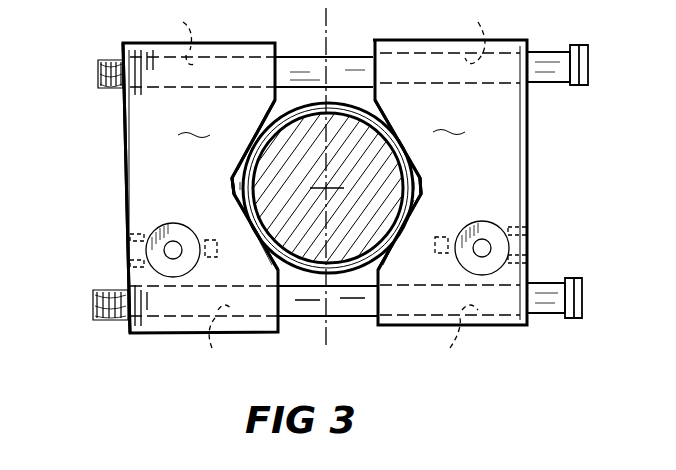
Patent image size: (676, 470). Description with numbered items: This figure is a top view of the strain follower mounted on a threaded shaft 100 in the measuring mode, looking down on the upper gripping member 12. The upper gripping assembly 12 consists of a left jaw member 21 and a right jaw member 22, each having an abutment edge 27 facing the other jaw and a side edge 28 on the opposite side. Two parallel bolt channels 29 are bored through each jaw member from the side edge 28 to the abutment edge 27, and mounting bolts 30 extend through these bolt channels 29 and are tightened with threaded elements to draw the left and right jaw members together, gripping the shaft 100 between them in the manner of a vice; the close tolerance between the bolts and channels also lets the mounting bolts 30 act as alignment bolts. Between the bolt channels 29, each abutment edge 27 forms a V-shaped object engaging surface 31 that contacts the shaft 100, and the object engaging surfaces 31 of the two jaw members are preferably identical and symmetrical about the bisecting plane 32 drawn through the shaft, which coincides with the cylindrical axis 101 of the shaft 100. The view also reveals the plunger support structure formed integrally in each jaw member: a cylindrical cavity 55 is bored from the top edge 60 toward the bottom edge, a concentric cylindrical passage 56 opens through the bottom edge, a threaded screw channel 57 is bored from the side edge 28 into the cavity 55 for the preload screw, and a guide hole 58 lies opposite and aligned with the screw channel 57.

The upper gripping member 12 is at (298, 42).
The left jaw member 21 is at (127, 115).
The right jaw member 22 is at (520, 125).
The abutment edge 27 is at (290, 282).
The side edge 28 is at (125, 183).
The bolt channels 29 is at (321, 189).
The mounting bolts 30 is at (540, 52).
The object engaging surface 31 is at (232, 184).
The plane 32 is at (334, 28).
The cylindrical cavity 55 is at (180, 226).
The cylindrical passage 56 is at (176, 255).
The threaded screw channel 57 is at (126, 251).
The guide hole 58 is at (218, 258).
The top edge 60 is at (321, 123).
The threaded shaft 100 is at (340, 272).
The cylindrical axis 101 is at (326, 188).